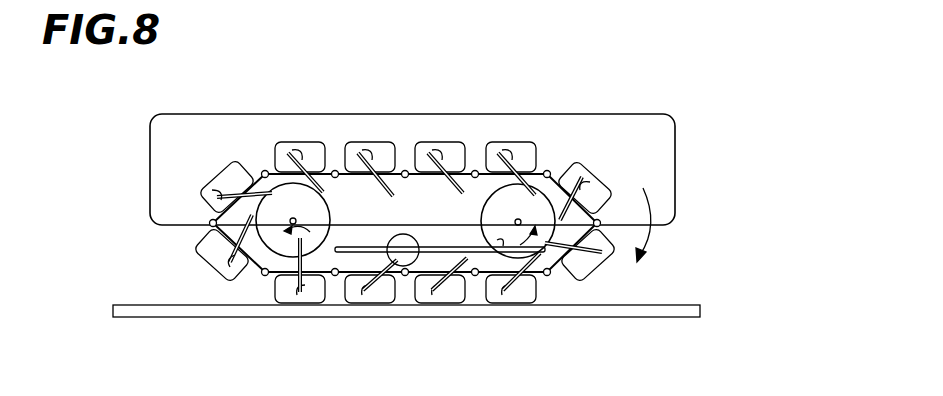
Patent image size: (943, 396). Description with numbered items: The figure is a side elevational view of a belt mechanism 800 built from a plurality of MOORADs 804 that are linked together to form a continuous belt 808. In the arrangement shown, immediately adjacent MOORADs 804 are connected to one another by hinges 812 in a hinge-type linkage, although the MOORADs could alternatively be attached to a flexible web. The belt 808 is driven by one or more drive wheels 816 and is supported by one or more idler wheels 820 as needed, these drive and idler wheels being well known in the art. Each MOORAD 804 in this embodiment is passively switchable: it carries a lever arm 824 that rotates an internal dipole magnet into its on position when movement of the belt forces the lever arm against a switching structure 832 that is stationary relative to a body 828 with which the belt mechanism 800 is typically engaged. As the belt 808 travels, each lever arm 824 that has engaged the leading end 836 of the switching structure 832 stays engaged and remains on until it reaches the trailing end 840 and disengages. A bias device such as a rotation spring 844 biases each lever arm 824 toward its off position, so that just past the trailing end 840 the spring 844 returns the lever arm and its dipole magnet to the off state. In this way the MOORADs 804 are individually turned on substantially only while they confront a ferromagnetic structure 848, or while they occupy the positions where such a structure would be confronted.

The belt mechanism 800 is at (150, 246).
The MOORAD 804 is at (455, 152).
The continuous belt 808 is at (558, 149).
The hinge 812 is at (265, 172).
The drive wheel 816 is at (325, 172).
The idler wheel 820 is at (405, 238).
The lever arm 824 is at (292, 268).
The body 828 is at (684, 150).
The switching structure 832 is at (492, 238).
The leading end 836 is at (600, 268).
The trailing end 840 is at (347, 255).
The rotation spring 844 is at (510, 152).
The ferromagnetic structure 848 is at (147, 317).